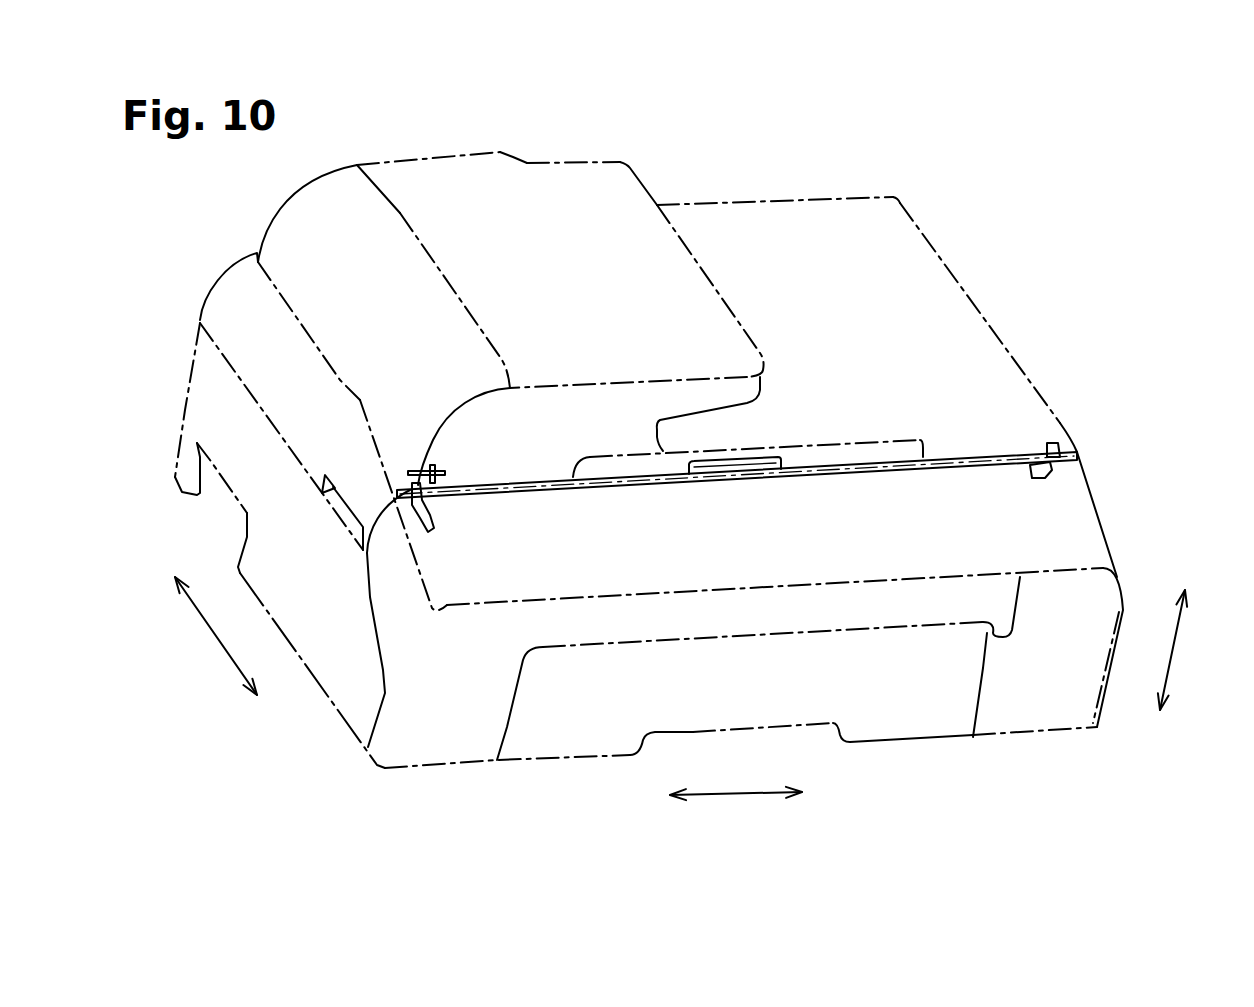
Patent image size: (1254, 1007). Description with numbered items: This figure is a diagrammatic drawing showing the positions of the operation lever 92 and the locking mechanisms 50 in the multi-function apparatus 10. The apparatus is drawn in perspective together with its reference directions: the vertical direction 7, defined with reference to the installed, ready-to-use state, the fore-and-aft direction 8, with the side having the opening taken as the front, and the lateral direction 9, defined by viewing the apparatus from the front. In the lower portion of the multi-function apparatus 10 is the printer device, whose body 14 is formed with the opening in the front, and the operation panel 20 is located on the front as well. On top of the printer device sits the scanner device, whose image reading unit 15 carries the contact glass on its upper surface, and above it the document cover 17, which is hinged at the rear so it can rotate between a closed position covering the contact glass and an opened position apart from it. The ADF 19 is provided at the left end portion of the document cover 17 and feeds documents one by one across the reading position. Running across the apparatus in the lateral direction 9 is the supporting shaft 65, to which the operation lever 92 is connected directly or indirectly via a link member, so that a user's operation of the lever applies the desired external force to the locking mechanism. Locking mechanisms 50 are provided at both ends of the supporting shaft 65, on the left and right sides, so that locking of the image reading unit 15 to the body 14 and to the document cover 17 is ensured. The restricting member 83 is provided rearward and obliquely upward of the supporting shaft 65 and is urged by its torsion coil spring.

The vertical direction 7 is at (1177, 650).
The fore-and-aft direction 8 is at (210, 637).
The lateral direction 9 is at (757, 793).
The multi-function apparatus 10 is at (338, 758).
The body 14 is at (200, 378).
The image reading unit 15 is at (232, 298).
The document cover 17 is at (958, 323).
The ADF 19 is at (660, 167).
The operation panel 20 is at (1088, 542).
The locking mechanism 50 is at (445, 513).
The supporting shaft 65 is at (838, 480).
The restricting member 83 is at (418, 460).
The operation lever 92 is at (762, 463).